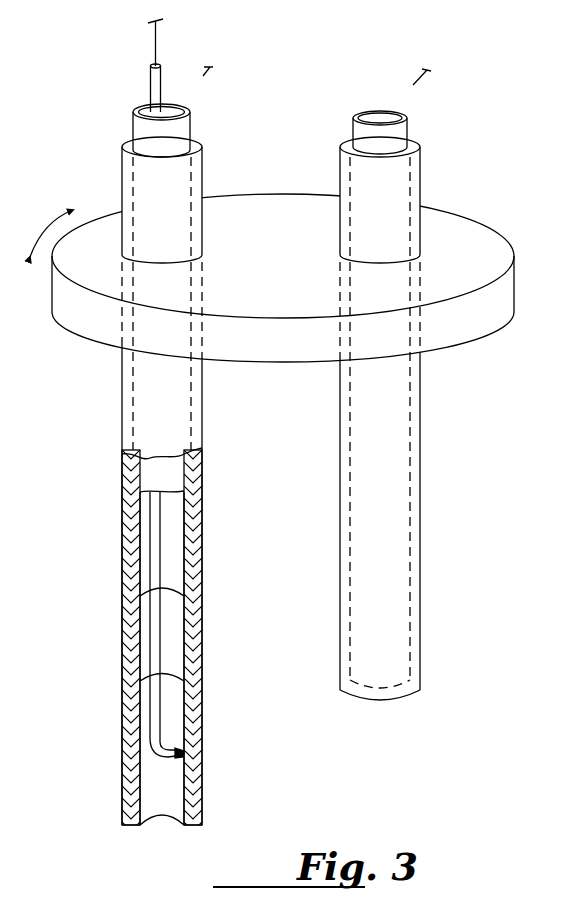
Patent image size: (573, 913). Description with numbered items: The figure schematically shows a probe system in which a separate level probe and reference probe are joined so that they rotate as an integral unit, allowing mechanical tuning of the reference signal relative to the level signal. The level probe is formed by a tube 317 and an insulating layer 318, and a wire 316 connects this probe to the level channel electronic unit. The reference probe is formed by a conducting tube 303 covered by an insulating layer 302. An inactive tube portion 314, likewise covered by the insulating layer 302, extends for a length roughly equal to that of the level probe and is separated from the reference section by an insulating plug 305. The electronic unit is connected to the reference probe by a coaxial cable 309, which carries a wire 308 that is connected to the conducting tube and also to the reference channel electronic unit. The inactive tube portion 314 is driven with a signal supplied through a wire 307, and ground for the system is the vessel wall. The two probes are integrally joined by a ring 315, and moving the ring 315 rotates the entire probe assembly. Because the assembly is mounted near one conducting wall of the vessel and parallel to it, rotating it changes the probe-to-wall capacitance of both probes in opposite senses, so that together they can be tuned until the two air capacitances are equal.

The insulating layer 302 is at (197, 184).
The conducting tube 303 is at (196, 692).
The insulating plug 305 is at (190, 609).
The wire 307 is at (180, 106).
The wire 308 is at (157, 38).
The coaxial cable 309 is at (152, 89).
The inactive tube portion 314 is at (180, 129).
The ring 315 is at (468, 325).
The wire 316 is at (405, 117).
The tube 317 is at (395, 136).
The insulating layer 318 is at (415, 186).